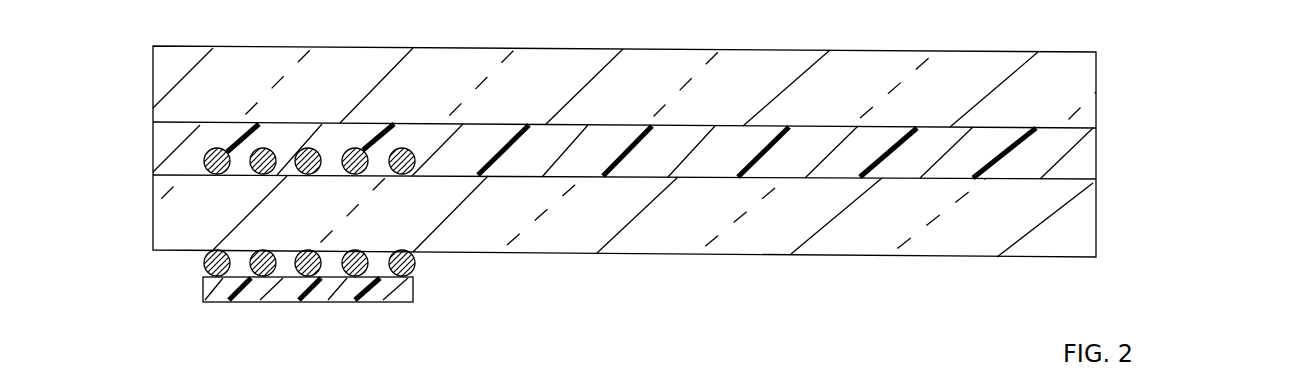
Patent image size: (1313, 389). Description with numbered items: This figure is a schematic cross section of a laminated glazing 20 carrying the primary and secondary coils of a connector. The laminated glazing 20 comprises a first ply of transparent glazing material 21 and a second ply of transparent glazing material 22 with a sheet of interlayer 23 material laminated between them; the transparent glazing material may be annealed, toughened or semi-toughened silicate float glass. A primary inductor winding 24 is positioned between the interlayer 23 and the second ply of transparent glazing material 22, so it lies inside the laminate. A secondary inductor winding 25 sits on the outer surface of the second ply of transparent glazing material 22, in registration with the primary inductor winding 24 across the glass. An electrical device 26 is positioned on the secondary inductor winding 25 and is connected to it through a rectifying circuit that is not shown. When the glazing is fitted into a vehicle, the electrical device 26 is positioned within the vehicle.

The laminated glazing 20 is at (1193, 67).
The first ply of transparent glazing material 21 is at (1096, 84).
The second ply of transparent glazing material 22 is at (1087, 242).
The interlayer 23 is at (1088, 164).
The primary inductor winding 24 is at (203, 158).
The secondary inductor winding 25 is at (204, 266).
The electrical device 26 is at (402, 305).